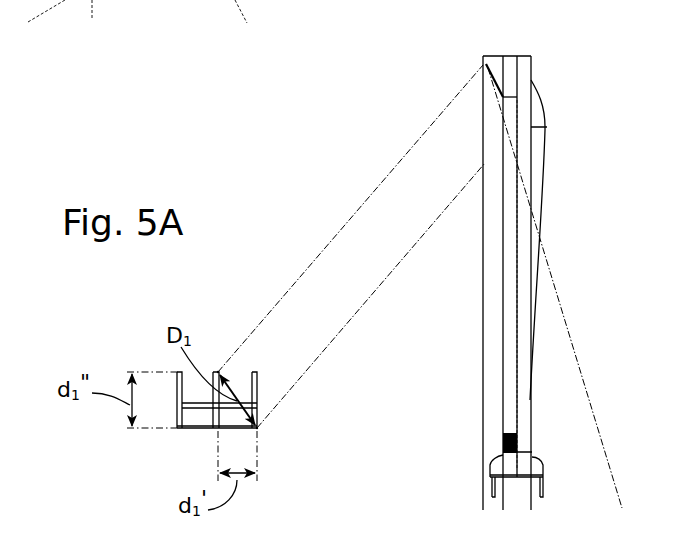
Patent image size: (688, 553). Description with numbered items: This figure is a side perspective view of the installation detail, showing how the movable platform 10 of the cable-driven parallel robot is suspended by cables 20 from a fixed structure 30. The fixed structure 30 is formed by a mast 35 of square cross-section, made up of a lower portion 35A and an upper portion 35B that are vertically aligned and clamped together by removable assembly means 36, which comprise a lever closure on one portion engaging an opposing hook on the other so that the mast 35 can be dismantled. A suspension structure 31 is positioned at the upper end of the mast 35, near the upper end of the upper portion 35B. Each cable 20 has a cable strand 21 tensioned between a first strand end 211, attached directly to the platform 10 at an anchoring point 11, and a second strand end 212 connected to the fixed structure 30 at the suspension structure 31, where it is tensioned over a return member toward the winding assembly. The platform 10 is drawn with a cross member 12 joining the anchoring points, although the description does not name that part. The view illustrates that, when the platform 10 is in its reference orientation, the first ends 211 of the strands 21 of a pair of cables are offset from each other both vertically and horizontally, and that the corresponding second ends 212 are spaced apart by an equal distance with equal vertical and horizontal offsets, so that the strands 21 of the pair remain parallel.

The movable platform 10 is at (192, 441).
The anchoring point 11 is at (230, 366).
The cross bar of target 12 is at (257, 392).
The first strand end 211 is at (219, 372).
The suspension cable 20 is at (306, 266).
The cable strand 21 is at (373, 193).
The second strand end 212 is at (480, 68).
The fixed structure 30 is at (543, 62).
The suspension structure 31 is at (508, 64).
The mast 35 is at (532, 155).
The lower portion 35A is at (513, 500).
The upper portion 35B is at (527, 215).
The assembly means 36 is at (539, 452).